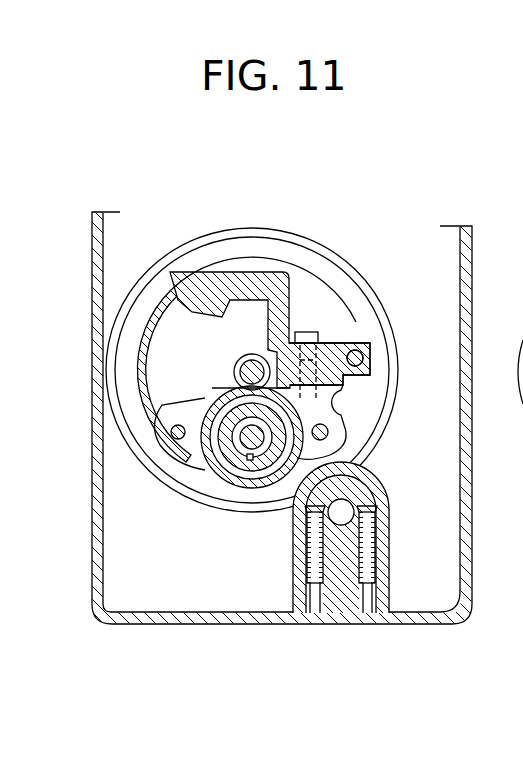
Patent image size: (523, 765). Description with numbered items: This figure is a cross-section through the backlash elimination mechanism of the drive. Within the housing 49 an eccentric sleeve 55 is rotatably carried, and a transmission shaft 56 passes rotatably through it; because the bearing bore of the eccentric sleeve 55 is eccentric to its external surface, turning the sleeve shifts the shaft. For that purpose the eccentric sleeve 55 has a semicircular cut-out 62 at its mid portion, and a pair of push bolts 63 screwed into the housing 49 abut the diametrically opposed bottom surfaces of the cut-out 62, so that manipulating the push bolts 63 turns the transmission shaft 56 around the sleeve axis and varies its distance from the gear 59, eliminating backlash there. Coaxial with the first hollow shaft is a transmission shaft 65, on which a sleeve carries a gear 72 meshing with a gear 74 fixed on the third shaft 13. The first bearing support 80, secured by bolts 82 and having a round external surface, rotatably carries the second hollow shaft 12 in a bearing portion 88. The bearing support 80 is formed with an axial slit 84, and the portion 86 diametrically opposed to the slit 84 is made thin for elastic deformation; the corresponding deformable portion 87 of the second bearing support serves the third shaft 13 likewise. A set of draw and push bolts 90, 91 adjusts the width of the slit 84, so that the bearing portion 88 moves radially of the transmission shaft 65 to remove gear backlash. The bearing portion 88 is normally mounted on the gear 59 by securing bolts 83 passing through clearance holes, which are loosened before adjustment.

The second hollow shaft 12 is at (215, 410).
The third shaft 13 is at (228, 445).
The housing 49 is at (160, 624).
The eccentric sleeve 55 is at (372, 494).
The transmission shaft 56 is at (347, 600).
The gear 59 is at (305, 240).
The semicircular cut-out 62 is at (380, 537).
The push bolts 63 is at (315, 600).
The transmission shaft 65 is at (251, 354).
The gear 72 is at (236, 362).
The gear 74 is at (246, 458).
The first bearing support 80 is at (256, 257).
The bolts 82 is at (362, 355).
The securing bolts 83 is at (328, 437).
The slit 84 is at (345, 380).
The deformable portion 86 is at (148, 360).
The deformable portion 87 is at (520, 340).
The bearing portion 88 is at (212, 478).
The draw bolt 90 is at (312, 332).
The push bolt 91 is at (330, 340).